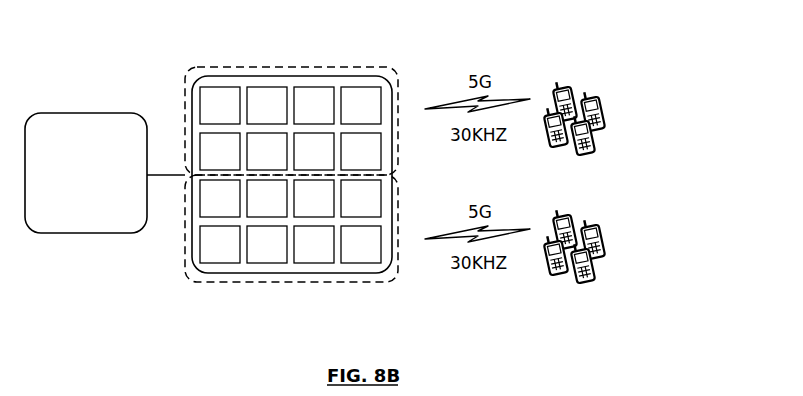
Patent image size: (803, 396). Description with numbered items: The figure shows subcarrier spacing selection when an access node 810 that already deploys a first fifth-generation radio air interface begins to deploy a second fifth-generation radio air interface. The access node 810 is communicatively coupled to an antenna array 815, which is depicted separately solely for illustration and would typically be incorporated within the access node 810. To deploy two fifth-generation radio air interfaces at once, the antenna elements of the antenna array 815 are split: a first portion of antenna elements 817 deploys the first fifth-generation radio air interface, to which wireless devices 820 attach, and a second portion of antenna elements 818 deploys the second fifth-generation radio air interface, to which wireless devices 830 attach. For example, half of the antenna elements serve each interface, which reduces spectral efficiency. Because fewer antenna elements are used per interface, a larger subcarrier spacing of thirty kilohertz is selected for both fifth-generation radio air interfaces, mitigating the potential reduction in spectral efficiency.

The access node 810 is at (103, 184).
The antenna array 815 is at (295, 76).
The first portion of antenna elements 817 is at (193, 72).
The second portion of antenna elements 818 is at (192, 275).
The wireless devices 820 is at (630, 96).
The wireless devices 830 is at (630, 224).